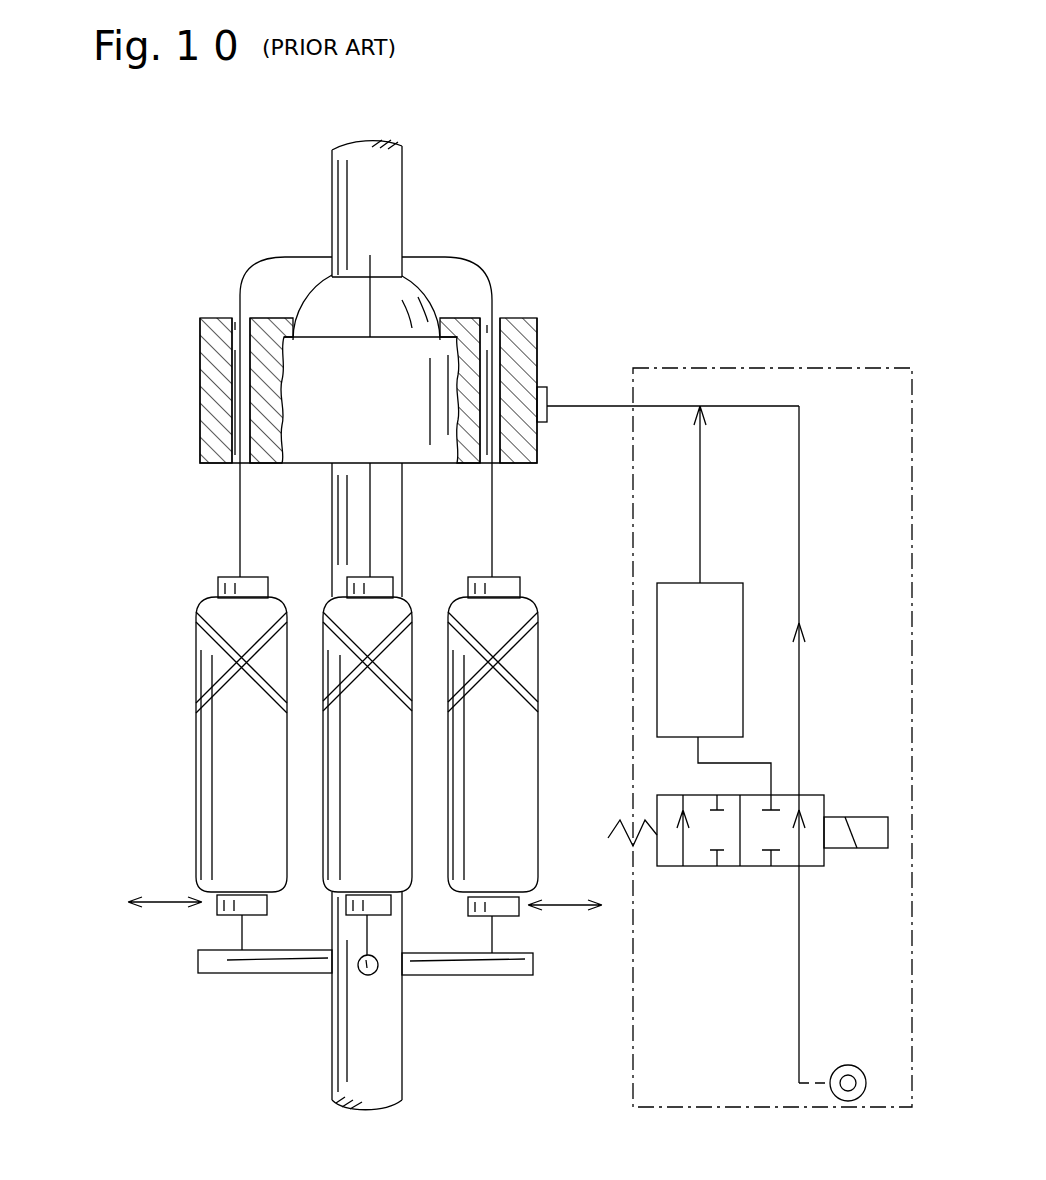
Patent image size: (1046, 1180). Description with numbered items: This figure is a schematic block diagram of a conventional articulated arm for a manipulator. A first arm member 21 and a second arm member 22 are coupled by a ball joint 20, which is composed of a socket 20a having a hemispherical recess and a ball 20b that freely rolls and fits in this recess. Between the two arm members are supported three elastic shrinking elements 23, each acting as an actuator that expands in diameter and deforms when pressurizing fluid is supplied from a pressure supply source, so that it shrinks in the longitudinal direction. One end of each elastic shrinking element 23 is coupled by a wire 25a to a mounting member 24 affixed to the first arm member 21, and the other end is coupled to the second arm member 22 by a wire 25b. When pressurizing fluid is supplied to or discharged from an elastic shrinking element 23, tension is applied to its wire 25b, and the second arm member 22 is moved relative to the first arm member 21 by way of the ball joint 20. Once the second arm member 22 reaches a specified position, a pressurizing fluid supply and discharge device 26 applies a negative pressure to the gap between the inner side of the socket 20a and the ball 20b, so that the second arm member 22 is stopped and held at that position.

The ball joint 20 is at (413, 282).
The socket 20a is at (200, 383).
The ball 20b is at (415, 303).
The first arm member 21 is at (333, 1063).
The second arm member 22 is at (333, 203).
The elastic shrinking element 23 is at (322, 772).
The mounting member 24 is at (215, 968).
The wire 25a is at (367, 930).
The wire 25b is at (240, 522).
The pressurizing fluid supply and discharge device 26 is at (778, 368).